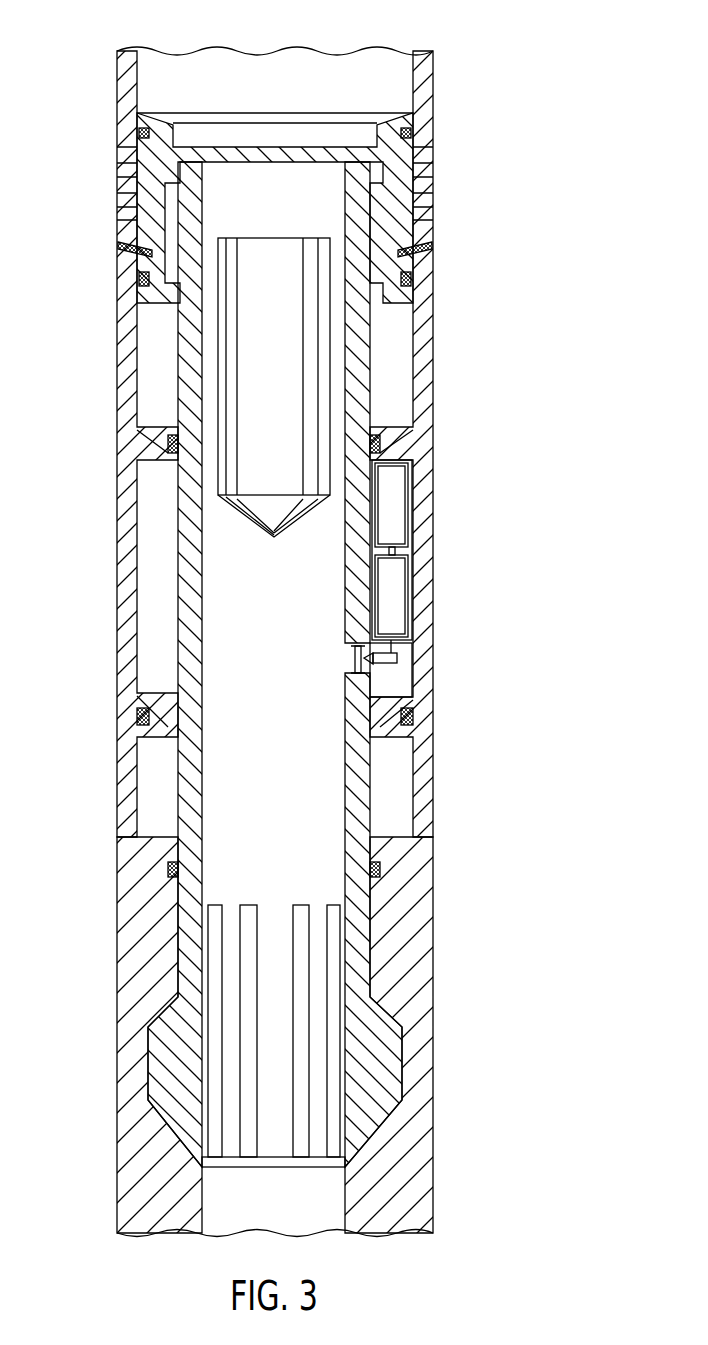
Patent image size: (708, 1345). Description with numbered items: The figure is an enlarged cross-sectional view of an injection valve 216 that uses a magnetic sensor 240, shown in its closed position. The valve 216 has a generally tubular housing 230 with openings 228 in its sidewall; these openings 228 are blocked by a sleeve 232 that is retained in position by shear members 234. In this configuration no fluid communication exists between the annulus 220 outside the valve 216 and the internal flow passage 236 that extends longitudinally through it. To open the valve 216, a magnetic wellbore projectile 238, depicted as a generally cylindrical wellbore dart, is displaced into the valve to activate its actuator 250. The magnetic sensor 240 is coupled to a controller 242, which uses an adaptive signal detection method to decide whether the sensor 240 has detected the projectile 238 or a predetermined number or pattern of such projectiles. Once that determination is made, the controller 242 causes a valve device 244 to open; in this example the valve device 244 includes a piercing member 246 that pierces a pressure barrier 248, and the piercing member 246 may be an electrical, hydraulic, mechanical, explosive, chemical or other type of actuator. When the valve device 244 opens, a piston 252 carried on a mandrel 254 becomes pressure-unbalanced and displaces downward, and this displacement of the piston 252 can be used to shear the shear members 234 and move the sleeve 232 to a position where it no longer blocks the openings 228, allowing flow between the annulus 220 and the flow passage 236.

The injection valve 216 is at (556, 76).
The annulus 220 is at (462, 345).
The openings 228 is at (427, 213).
The tubular housing 230 is at (433, 448).
The sleeve 232 is at (218, 113).
The shear members 234 is at (118, 249).
The internal bore 236 is at (285, 602).
The magnetic wellbore projectile 238 is at (258, 238).
The magnetic sensor 240 is at (405, 498).
The controller 242 is at (405, 595).
The valve device 244 is at (399, 681).
The piercing member 246 is at (365, 670).
The pressure barrier 248 is at (353, 660).
The actuator 250 is at (422, 557).
The piston 252 is at (140, 724).
The mandrel 254 is at (180, 537).